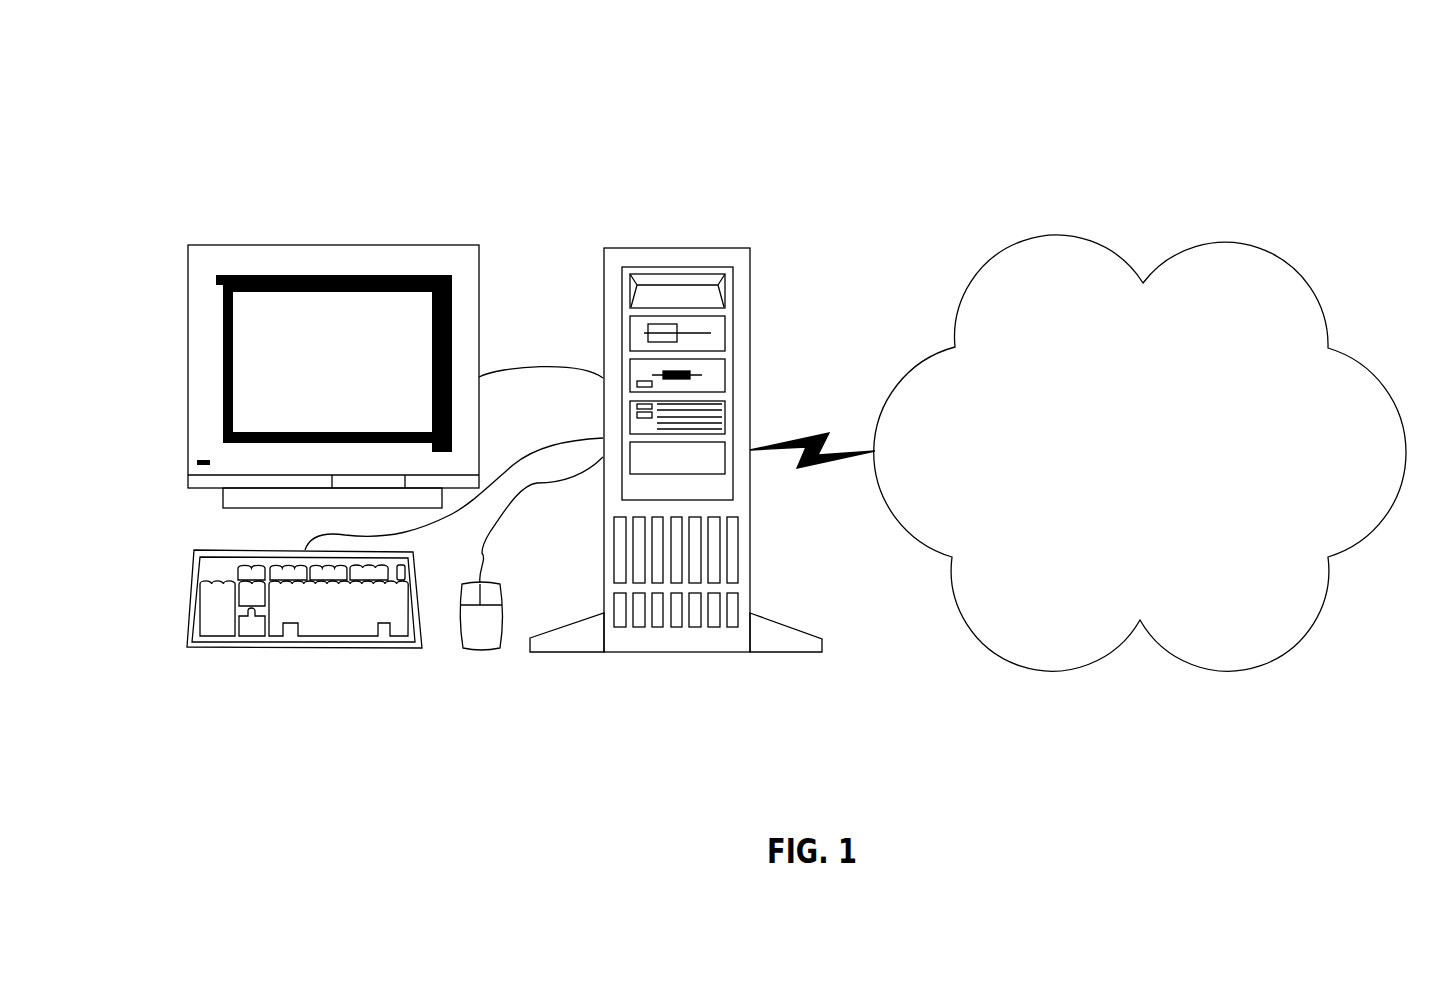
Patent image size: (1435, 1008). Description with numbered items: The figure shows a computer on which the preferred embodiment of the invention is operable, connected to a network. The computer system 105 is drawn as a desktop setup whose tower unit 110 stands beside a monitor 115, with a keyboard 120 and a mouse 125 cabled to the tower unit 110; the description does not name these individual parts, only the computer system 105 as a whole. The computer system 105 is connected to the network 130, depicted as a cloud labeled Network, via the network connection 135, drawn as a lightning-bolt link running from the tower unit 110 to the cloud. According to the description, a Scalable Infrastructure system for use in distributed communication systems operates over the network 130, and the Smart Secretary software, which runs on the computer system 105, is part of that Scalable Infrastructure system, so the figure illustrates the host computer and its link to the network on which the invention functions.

The computer system 105 is at (221, 84).
The computer tower / processing unit 110 is at (648, 247).
The monitor / display 115 is at (232, 245).
The keyboard 120 is at (227, 649).
The mouse 125 is at (477, 651).
The network 130 is at (955, 347).
The network connection 135 is at (823, 432).